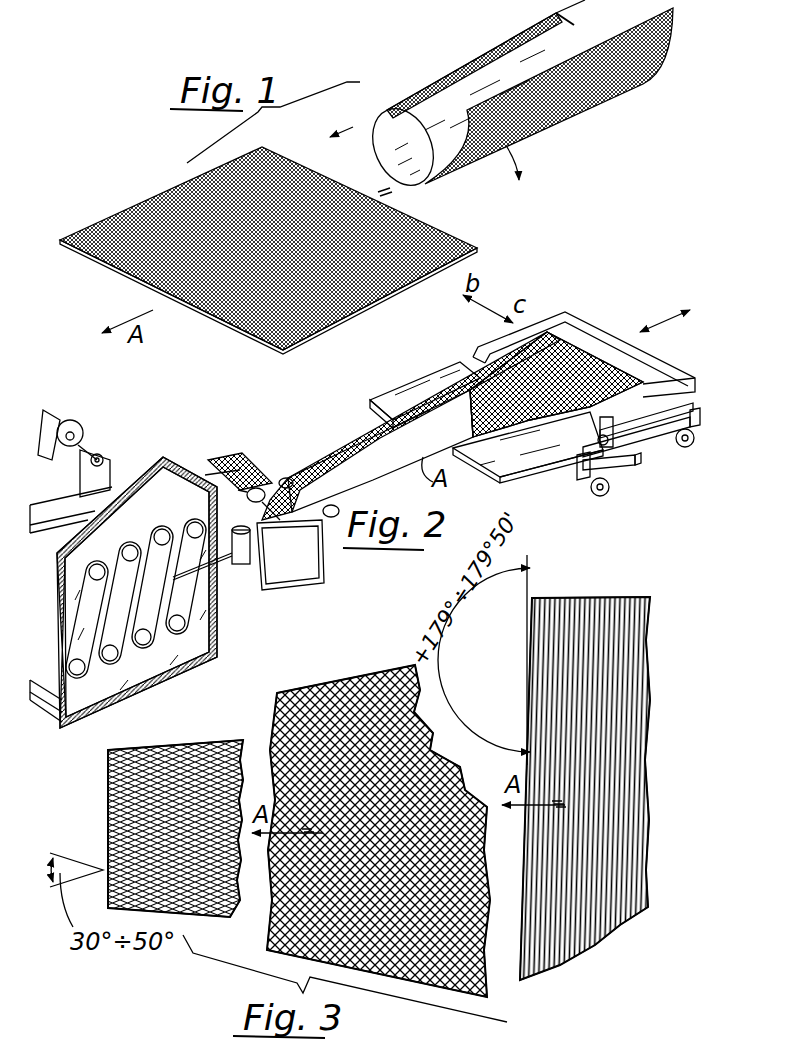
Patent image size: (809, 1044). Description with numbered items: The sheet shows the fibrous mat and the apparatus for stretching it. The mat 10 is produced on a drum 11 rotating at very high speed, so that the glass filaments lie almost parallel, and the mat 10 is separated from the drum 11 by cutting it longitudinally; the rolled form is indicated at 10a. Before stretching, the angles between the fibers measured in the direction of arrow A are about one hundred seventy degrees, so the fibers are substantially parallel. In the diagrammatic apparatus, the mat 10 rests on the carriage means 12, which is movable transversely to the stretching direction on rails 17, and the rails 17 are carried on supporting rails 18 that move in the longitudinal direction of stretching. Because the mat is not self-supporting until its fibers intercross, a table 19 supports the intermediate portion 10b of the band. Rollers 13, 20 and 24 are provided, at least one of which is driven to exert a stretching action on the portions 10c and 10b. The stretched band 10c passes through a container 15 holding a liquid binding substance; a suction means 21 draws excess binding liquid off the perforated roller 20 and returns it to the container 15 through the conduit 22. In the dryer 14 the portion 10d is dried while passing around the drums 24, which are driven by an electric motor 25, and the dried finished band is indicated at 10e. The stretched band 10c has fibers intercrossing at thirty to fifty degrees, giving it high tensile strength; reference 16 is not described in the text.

In FIG. 1, the mat 10 is at (155, 210).
In FIG. 2, the mat 10 is at (583, 360).
In FIG. 3, the mat 10 is at (587, 597).
In FIG. 1, the rolled mesh sheet 10a is at (597, 100).
In FIG. 2, the intermediate portion of the band 10b is at (437, 397).
In FIG. 3, the intermediate portion of the band 10b is at (332, 713).
In FIG. 2, the stretched band 10c is at (318, 470).
In FIG. 3, the stretched band 10c is at (130, 790).
In FIG. 2, the portion of the band in the dryer 10d is at (237, 467).
In FIG. 2, the dried finished band 10e is at (47, 725).
In FIG. 1, the drum 11 is at (460, 95).
In FIG. 2, the carriage means 12 is at (570, 327).
In FIG. 2, the roller 13 is at (286, 477).
In FIG. 2, the dryer 14 is at (180, 665).
In FIG. 2, the container 15 is at (308, 565).
In FIG. 2, the rail 16 is at (633, 437).
In FIG. 2, the rails 17 is at (623, 467).
In FIG. 2, the supporting rails 18 is at (587, 488).
In FIG. 2, the table 19 is at (513, 450).
In FIG. 2, the perforated roller 20 is at (257, 487).
In FIG. 2, the suction means 21 is at (243, 570).
In FIG. 2, the conduit 22 is at (262, 577).
In FIG. 2, the drums 24 is at (152, 520).
In FIG. 2, the electric motor 25 is at (80, 430).